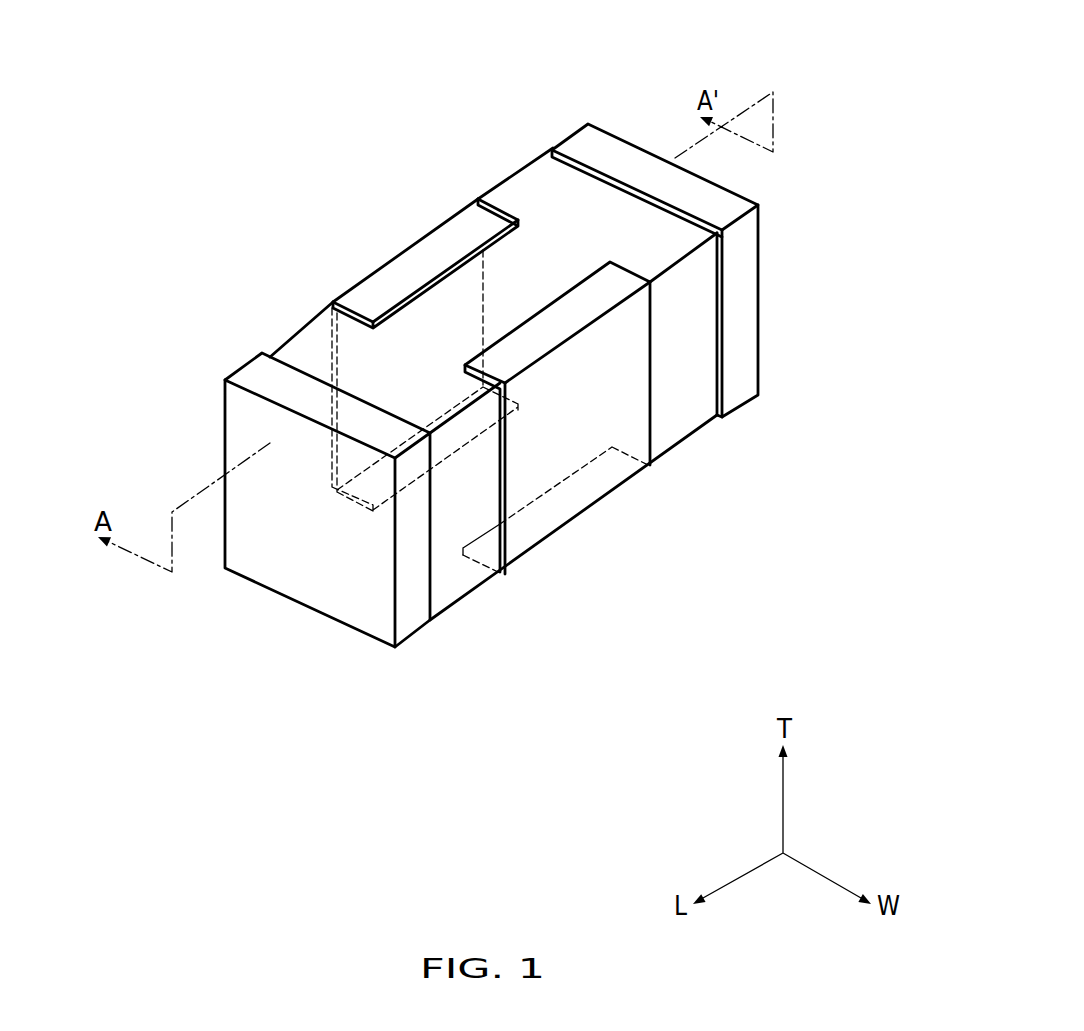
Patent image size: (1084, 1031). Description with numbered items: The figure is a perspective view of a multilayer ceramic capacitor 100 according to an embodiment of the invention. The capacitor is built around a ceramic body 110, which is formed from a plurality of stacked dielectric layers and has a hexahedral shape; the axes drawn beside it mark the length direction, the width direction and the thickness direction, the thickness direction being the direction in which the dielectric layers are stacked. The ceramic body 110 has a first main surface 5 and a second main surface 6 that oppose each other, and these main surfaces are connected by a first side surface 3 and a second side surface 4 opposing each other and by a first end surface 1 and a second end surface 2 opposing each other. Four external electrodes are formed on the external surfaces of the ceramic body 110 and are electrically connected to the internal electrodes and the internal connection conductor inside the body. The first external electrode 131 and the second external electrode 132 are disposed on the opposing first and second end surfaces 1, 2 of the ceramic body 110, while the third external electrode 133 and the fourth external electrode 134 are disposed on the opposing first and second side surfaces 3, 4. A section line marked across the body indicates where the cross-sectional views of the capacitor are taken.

The multilayer ceramic capacitor 100 is at (582, 83).
The ceramic body 110 is at (470, 422).
The first end surface 1 is at (357, 415).
The second end surface 2 is at (708, 250).
The first side surface 3 is at (583, 449).
The second side surface 4 is at (282, 348).
The first main surface 5 is at (318, 340).
The second main surface 6 is at (440, 603).
The first external electrode 131 is at (295, 563).
The second external electrode 132 is at (623, 160).
The third external electrode 133 is at (583, 487).
The fourth external electrode 134 is at (418, 262).